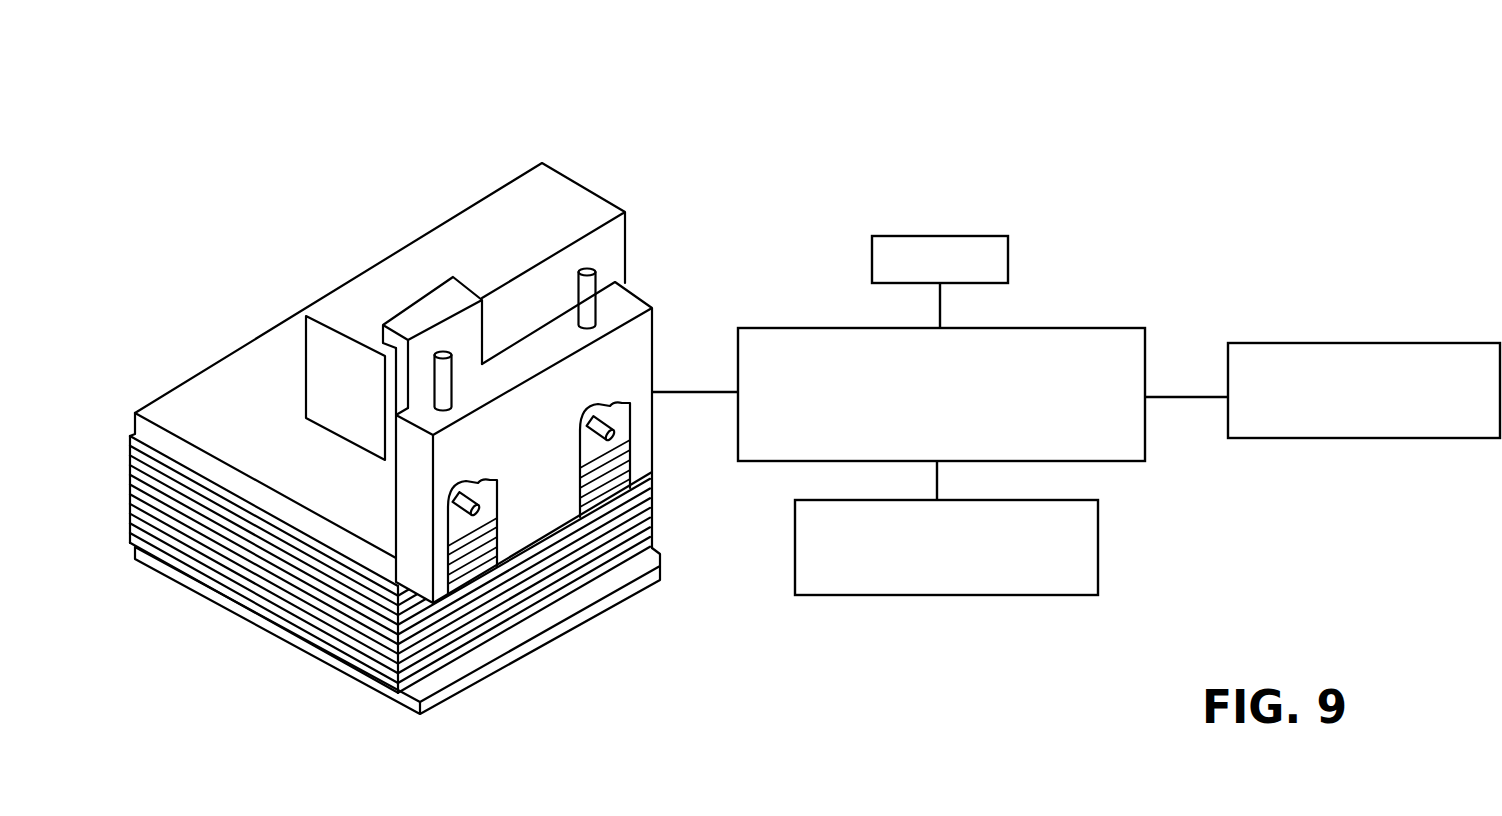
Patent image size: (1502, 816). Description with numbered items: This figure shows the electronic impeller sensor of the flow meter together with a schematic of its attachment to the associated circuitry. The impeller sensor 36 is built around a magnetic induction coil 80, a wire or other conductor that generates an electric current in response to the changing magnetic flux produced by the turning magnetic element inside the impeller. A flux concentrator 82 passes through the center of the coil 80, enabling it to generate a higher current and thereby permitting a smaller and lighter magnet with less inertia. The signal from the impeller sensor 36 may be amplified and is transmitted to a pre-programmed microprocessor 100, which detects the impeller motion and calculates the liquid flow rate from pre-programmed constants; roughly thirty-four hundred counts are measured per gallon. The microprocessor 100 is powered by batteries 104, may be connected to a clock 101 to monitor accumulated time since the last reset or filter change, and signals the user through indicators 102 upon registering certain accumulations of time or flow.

The impeller sensor 36 is at (177, 145).
The flux concentrator 82 is at (625, 236).
The magnetic induction coil 80 is at (323, 612).
The pre-programmed microprocessor 100 is at (1132, 328).
The clock 101 is at (1008, 272).
The indicators 102 is at (1302, 343).
The batteries 104 is at (1098, 530).